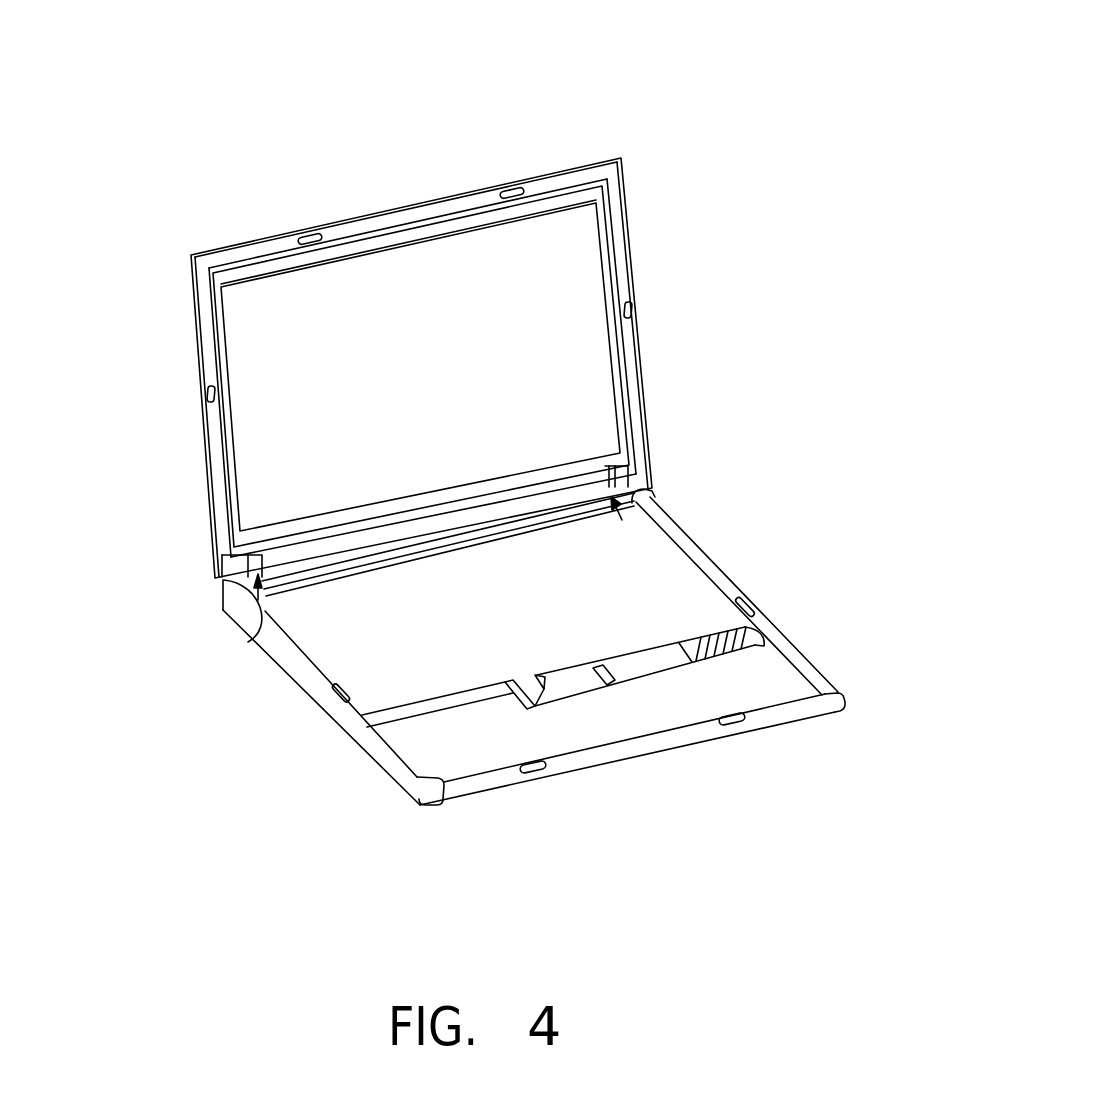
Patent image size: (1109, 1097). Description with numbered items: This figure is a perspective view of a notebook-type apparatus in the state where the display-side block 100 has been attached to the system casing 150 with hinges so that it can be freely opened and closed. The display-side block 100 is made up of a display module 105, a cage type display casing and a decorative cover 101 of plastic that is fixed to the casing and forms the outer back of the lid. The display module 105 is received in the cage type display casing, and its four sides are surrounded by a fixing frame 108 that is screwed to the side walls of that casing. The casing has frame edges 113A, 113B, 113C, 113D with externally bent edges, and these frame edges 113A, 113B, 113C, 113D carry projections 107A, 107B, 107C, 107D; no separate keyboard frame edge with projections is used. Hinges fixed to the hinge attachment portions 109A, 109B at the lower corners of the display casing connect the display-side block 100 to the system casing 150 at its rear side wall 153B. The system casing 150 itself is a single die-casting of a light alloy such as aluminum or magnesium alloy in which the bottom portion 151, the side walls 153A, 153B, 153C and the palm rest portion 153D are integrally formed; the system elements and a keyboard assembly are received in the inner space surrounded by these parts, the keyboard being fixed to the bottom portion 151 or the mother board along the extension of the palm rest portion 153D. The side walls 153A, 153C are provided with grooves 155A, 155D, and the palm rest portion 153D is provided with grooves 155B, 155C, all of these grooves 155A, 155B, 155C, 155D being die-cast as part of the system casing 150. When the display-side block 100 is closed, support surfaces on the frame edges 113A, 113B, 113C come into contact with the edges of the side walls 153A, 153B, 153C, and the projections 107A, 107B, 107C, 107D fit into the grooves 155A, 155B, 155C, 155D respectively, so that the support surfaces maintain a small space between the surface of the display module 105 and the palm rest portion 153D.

The display-side block 100 is at (628, 94).
The decorative cover 101 is at (207, 491).
The display module 105 is at (422, 389).
The projection 107A is at (207, 392).
The projection 107B is at (306, 237).
The projection 107C is at (512, 186).
The projection 107D is at (631, 312).
The fixing frame 108 is at (383, 247).
The hinge attachment portion 109A is at (255, 643).
The hinge attachment portion 109B is at (622, 530).
The frame edge 113A is at (213, 445).
The frame edge 113B is at (402, 216).
The frame edge 113C is at (637, 384).
The frame edge 113D is at (265, 545).
The system casing 150 is at (774, 459).
The bottom portion 151 is at (527, 633).
The side wall 153A is at (300, 680).
The side wall 153B is at (468, 538).
The side wall 153C is at (712, 556).
The palm rest portion 153D is at (516, 752).
The groove 155A is at (342, 702).
The groove 155B is at (535, 772).
The groove 155C is at (733, 722).
The groove 155D is at (760, 605).